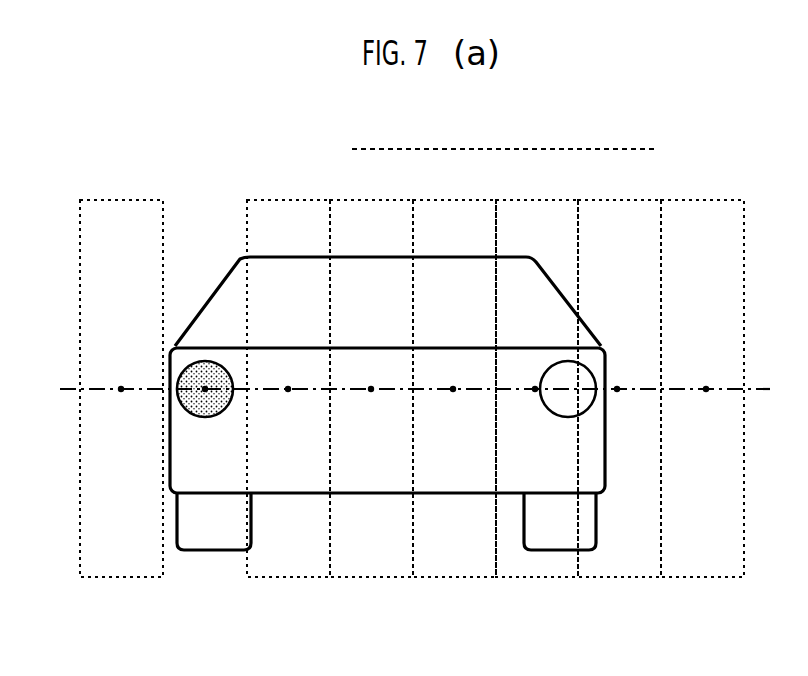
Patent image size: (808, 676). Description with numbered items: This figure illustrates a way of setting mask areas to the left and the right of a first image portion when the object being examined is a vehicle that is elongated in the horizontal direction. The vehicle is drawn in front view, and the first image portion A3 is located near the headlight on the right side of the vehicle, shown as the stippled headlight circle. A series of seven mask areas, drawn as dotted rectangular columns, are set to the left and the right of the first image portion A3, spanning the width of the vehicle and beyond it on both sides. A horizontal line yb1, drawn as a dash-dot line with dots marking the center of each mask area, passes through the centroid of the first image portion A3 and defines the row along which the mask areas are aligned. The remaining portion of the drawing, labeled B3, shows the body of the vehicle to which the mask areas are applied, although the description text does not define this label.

The first image portion A3 is at (193, 376).
The vehicle body B3 is at (290, 495).
The horizontal line yb1 is at (434, 389).